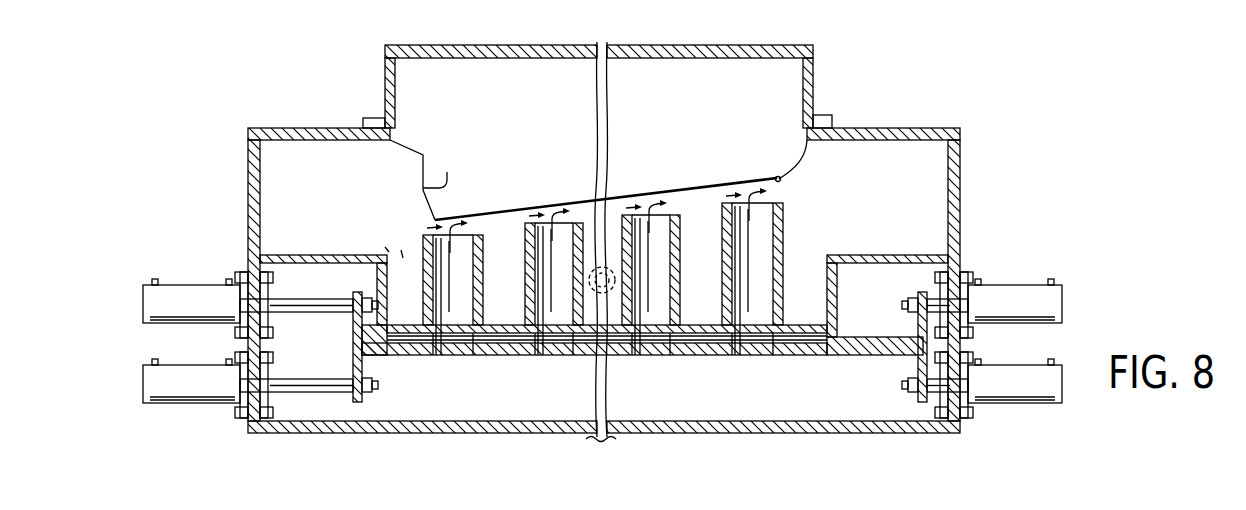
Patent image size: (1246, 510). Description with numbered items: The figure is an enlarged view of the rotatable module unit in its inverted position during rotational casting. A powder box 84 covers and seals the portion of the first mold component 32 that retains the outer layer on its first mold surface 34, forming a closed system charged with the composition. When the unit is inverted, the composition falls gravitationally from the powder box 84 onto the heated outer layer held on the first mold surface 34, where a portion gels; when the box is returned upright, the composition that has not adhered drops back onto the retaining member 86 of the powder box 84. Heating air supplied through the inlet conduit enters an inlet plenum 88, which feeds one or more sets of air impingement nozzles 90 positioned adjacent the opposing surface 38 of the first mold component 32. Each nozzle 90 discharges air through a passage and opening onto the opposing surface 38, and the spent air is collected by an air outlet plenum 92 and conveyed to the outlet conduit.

The first mold component 32 is at (416, 203).
The first mold surface 34 is at (783, 179).
The opposing surface 38 is at (520, 211).
The powder box 84 is at (385, 75).
The retaining member 86 is at (383, 118).
The inlet plenum 88 is at (713, 398).
The air impingement nozzles 90 is at (483, 290).
The air outlet plenum 92 is at (518, 246).